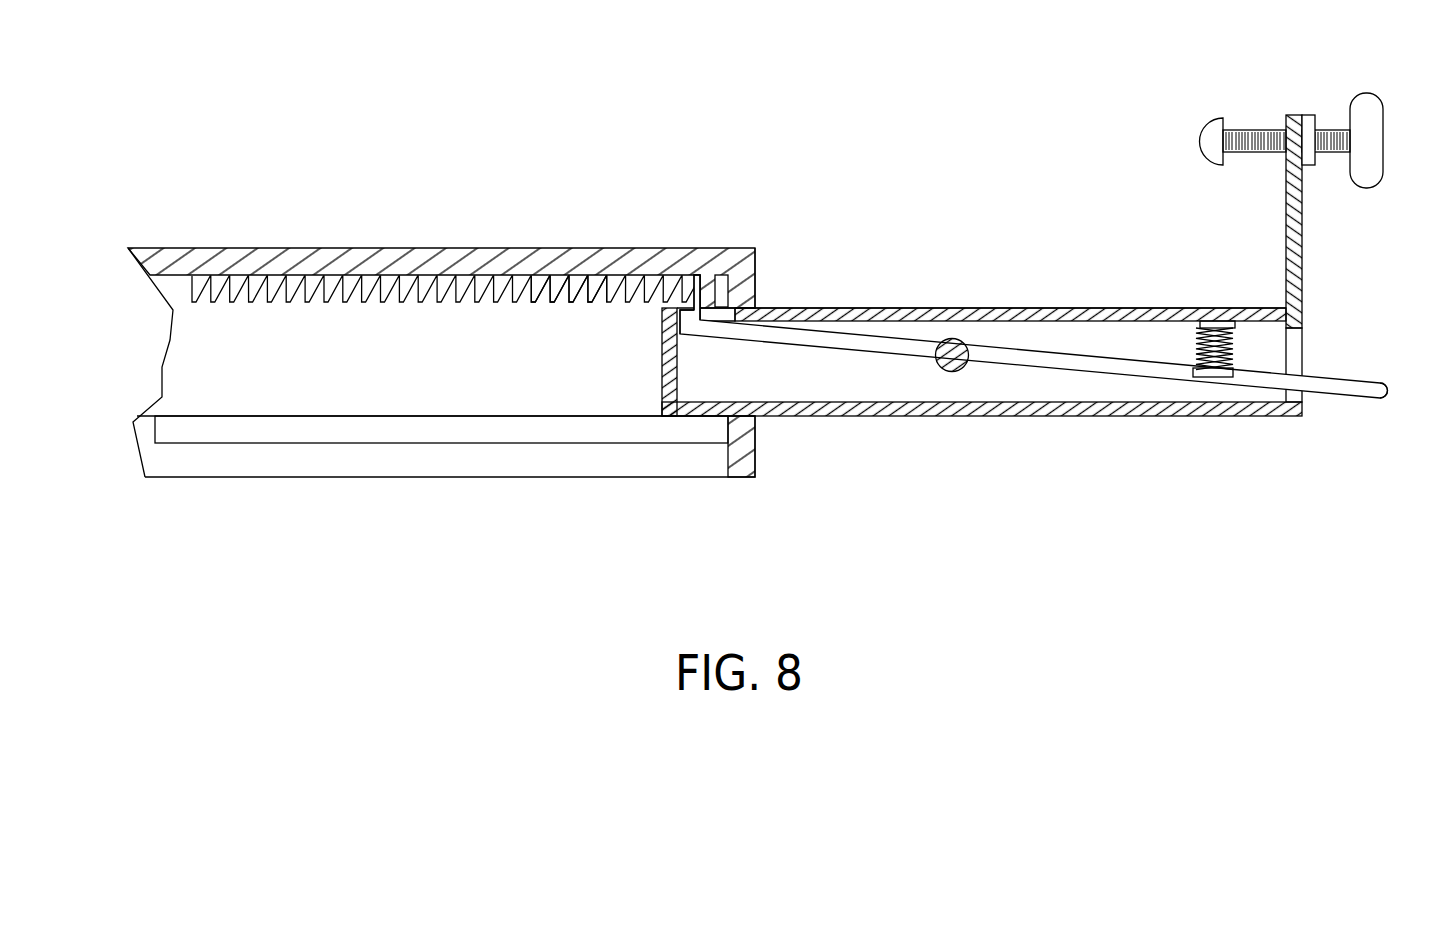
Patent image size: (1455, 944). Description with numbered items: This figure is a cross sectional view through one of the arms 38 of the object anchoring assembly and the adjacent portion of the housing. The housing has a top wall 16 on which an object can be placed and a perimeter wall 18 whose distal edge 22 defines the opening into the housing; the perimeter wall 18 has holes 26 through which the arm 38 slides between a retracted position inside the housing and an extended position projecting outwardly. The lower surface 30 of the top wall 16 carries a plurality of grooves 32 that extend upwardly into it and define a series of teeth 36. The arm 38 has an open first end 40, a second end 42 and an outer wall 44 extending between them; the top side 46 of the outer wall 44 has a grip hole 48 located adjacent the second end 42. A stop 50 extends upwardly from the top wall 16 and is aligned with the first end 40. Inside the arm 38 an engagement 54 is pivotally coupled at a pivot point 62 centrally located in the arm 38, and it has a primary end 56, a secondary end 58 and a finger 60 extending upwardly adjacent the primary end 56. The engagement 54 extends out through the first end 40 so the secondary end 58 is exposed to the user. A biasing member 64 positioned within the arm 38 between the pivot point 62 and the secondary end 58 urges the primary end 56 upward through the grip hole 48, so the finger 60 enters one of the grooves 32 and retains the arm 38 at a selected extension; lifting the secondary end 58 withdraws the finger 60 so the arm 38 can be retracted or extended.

The top wall 16 is at (568, 248).
The perimeter wall 18 is at (757, 290).
The distal edge 22 is at (740, 478).
The holes 26 is at (742, 320).
The lower surface 30 is at (167, 286).
The grooves 32 is at (470, 330).
The teeth 36 is at (607, 302).
The arms 38 is at (1107, 417).
The first end 40 is at (1302, 415).
The second end 42 is at (662, 372).
The outer wall 44 is at (1080, 307).
The top side 46 is at (970, 307).
The grip hole 48 is at (722, 275).
The stop 50 is at (1302, 212).
The engagements 54 is at (1030, 372).
The primary end 56 is at (680, 332).
The secondary end 58 is at (1393, 390).
The finger 60 is at (697, 275).
The pivot point 62 is at (938, 366).
The biasing members 64 is at (1193, 340).